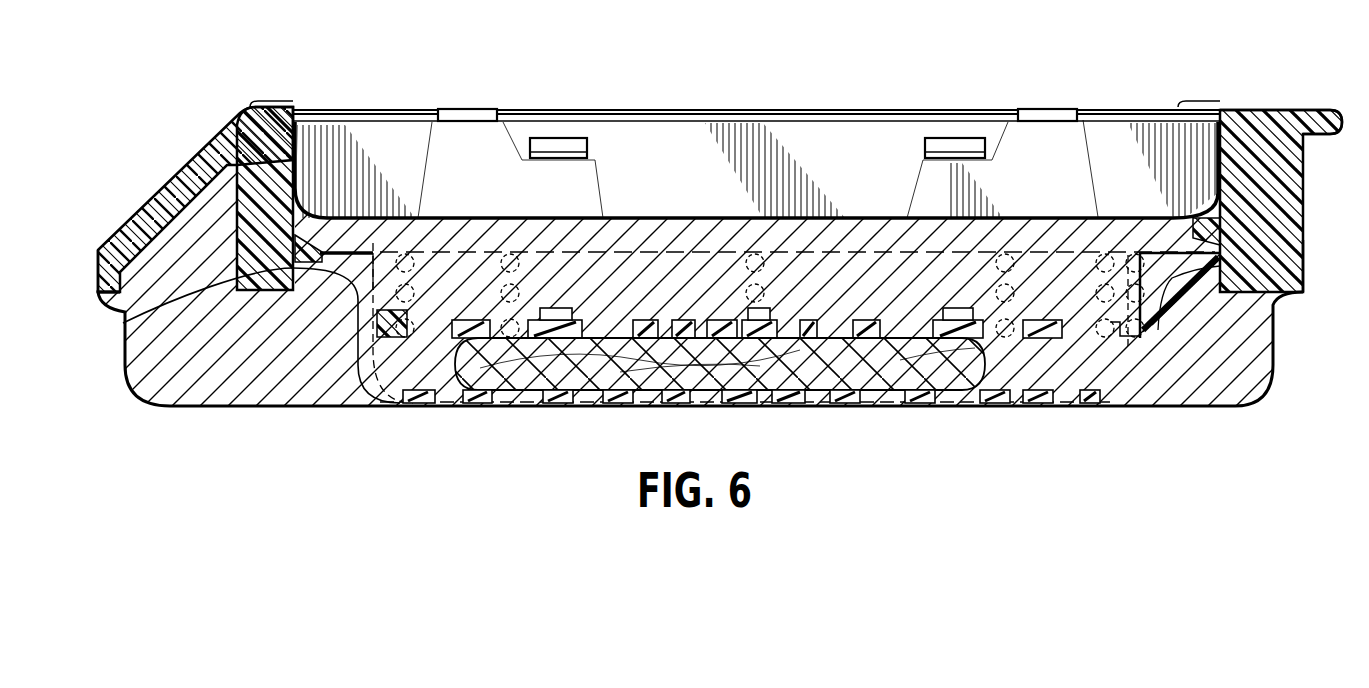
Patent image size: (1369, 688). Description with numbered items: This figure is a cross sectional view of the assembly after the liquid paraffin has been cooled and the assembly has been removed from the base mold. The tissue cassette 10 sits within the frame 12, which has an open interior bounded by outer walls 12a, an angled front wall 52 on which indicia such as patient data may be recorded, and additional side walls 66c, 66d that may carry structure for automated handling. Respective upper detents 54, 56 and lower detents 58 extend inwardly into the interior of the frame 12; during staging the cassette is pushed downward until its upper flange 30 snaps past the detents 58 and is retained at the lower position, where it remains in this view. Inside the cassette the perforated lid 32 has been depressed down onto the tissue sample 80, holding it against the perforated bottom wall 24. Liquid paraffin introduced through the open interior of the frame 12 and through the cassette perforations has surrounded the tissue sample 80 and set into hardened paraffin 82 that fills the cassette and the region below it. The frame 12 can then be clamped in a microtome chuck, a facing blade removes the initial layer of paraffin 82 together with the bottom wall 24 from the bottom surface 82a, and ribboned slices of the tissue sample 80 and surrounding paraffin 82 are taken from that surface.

The tissue cassette 10 is at (1160, 326).
The frame 12 is at (1303, 107).
The outer walls 12a is at (98, 268).
The bottom wall 24 is at (752, 395).
The upper flange 30 is at (1160, 250).
The lid 32 is at (718, 318).
The angled front wall 52 is at (180, 174).
The upper detents 54 is at (466, 110).
The upper detents 56 is at (546, 137).
The lower detents 58 is at (303, 242).
The side wall 66c is at (1285, 190).
The side wall 66d is at (123, 323).
The tissue sample 80 is at (905, 375).
The hardened paraffin 82 is at (1183, 403).
The bottom surface 82a is at (258, 407).